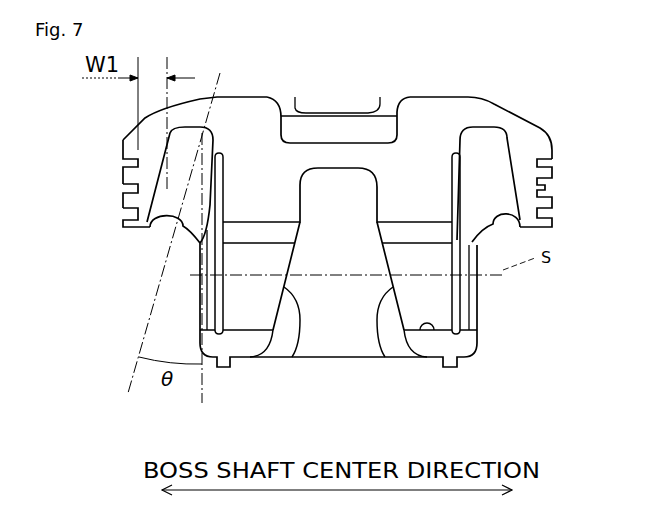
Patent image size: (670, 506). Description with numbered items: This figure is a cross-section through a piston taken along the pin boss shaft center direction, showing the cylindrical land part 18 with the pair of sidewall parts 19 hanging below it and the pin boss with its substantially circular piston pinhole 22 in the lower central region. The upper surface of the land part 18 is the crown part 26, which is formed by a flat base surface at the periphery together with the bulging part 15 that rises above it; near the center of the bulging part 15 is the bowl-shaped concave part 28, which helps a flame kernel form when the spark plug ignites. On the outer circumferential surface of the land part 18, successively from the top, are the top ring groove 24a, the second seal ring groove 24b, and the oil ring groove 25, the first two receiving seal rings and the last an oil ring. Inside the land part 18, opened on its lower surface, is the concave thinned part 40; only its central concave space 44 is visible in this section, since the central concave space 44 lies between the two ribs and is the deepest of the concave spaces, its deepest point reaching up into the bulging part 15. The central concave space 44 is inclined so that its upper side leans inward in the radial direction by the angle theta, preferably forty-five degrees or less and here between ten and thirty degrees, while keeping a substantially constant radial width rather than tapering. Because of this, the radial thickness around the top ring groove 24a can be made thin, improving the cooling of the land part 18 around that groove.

The bulging part 15 is at (487, 112).
The crown part 26 is at (338, 267).
The concave part 28 is at (338, 120).
The land part 18 is at (553, 170).
The top ring groove 24a is at (123, 161).
The seal ring groove 24b is at (123, 188).
The oil ring groove 25 is at (123, 210).
The thinned part 40 is at (163, 231).
The central concave space 44 is at (488, 184).
The sidewall part 19 is at (466, 303).
The piston pinhole 22 is at (430, 334).